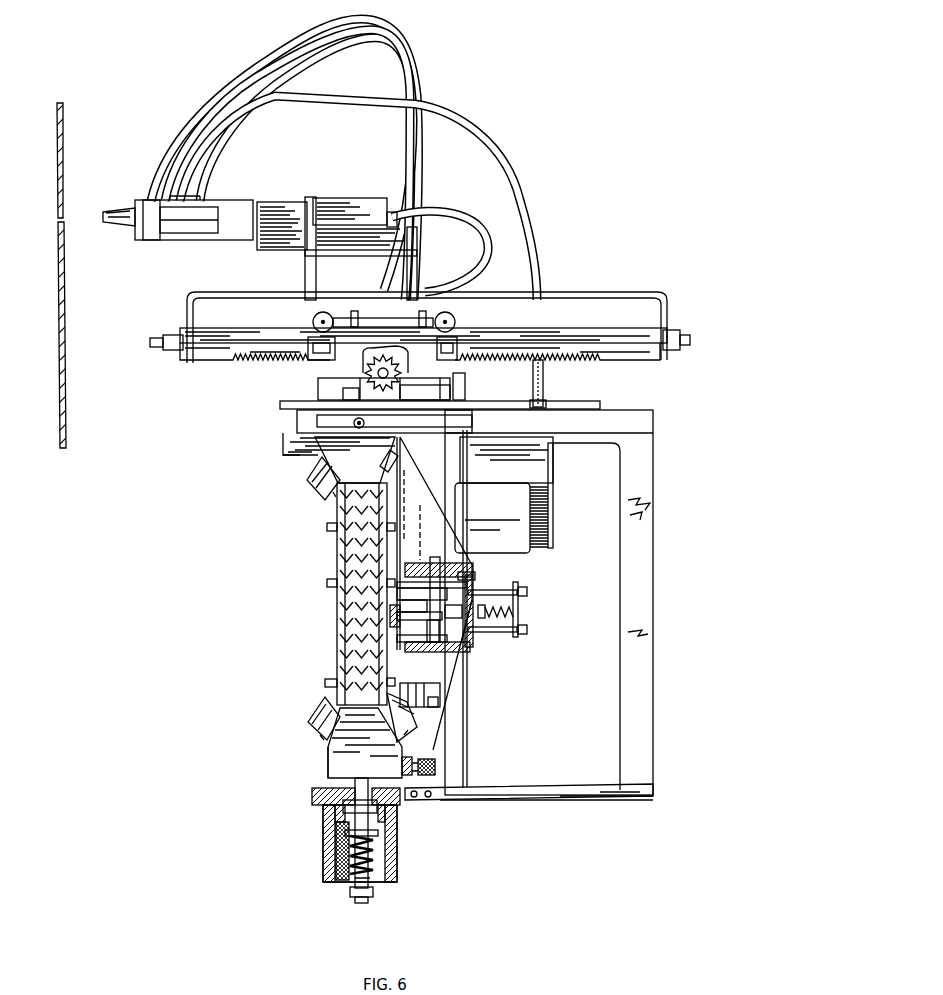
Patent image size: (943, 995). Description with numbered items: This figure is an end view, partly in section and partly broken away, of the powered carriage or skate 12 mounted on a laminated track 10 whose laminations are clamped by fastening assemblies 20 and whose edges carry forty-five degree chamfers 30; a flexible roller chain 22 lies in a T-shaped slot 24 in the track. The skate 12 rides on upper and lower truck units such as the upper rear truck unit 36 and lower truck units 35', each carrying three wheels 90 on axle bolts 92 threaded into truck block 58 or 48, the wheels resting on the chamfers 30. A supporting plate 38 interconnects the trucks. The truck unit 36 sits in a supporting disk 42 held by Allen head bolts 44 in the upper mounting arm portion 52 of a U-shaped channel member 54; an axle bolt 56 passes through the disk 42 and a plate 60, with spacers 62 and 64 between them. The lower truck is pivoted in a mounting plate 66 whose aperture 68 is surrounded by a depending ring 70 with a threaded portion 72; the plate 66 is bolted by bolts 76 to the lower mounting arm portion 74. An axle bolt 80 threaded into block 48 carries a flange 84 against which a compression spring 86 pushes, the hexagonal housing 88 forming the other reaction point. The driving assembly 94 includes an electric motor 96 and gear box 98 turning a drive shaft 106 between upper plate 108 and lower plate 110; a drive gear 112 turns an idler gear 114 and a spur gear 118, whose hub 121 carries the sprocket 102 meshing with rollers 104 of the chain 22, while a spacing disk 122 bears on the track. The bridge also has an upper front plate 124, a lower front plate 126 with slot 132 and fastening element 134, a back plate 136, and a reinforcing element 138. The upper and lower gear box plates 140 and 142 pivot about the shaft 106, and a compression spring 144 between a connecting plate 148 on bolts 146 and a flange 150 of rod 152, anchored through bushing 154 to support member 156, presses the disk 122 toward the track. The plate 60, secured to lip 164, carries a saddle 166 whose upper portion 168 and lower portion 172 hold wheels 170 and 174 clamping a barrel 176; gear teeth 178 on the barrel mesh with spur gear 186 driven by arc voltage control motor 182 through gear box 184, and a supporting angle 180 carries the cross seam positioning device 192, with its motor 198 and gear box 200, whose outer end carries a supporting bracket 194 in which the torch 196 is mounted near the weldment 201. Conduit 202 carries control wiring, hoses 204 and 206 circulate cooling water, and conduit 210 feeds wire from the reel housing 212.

The laminated track 10 is at (337, 631).
The powered carriage 12 is at (522, 824).
The fastening assembly 20 is at (328, 527).
The flexible roller chain 22 is at (337, 612).
The T-shaped slot 24 is at (392, 615).
The chamfers 30 is at (318, 697).
The lower truck units 35' is at (307, 762).
The upper rear truck follower unit 36 is at (310, 466).
The supporting plate 38 is at (468, 735).
The supporting disk 42 is at (318, 431).
The Allen head bolts 44 is at (365, 423).
The truck block 48 is at (355, 774).
The upper mounting arm portion 52 is at (440, 440).
The U-shaped channel member 54 is at (666, 524).
The axle bolt 56 is at (343, 392).
The truck block 58 is at (348, 481).
The plate 60 is at (283, 403).
The spacer 62 is at (318, 445).
The spacer washer 64 is at (316, 419).
The mounting plate 66 is at (311, 795).
The aperture 68 is at (385, 835).
The depending ring 70 is at (335, 830).
The threaded portion 72 is at (342, 806).
The lower mounting arm portion 74 is at (450, 801).
The bolts 76 is at (416, 801).
The axle bolt 80 is at (352, 896).
The flange 84 is at (338, 845).
The compression spring 86 is at (345, 863).
The hexagonal housing 88 is at (393, 850).
The wheels 90 is at (340, 502).
The axle bolts 92 is at (325, 498).
The driving assembly 94 is at (512, 563).
The electric motor 96 is at (480, 511).
The gear box 98 is at (470, 480).
The sprocket 102 is at (411, 652).
The rollers 104 is at (337, 648).
The drive shaft 106 is at (462, 700).
The upper plate 108 is at (411, 572).
The lower plate 110 is at (460, 700).
The drive gear 112 is at (468, 578).
The idler gear 114 is at (388, 600).
The spur gear 118 is at (395, 590).
The hub 121 is at (390, 607).
The spacing disk 122 is at (405, 690).
The upper front plate 124 is at (397, 570).
The lower front plate 126 is at (434, 700).
The slot 132 is at (415, 770).
The fastening element 134 is at (437, 765).
The back plate 136 is at (497, 562).
The reinforcing element 138 is at (408, 497).
The upper gear box plate 140 is at (450, 563).
The lower gear box plate 142 is at (443, 647).
The compression spring 144 is at (530, 630).
The countersunk headed bolts 146 is at (478, 607).
The connecting plate 148 is at (522, 585).
The flange 150 is at (483, 603).
The rod 152 is at (520, 607).
The bushing 154 is at (483, 620).
The gear box plate spacing and support member 156 is at (473, 638).
The lip 164 is at (312, 456).
The saddle 166 is at (415, 295).
The upper saddle portion 168 is at (345, 317).
The wheels 170 is at (313, 318).
The lower saddle portion 172 is at (458, 380).
The wheels 174 is at (304, 360).
The barrel 176 is at (577, 334).
The gear teeth 178 is at (248, 366).
The supporting angle 180 is at (604, 292).
The arc voltage control motor 182 is at (500, 361).
The gear box 184 is at (413, 388).
The spur gear 186 is at (365, 372).
The cross seam positioning device 192 is at (334, 187).
The cylinder housing 194 is at (232, 208).
The torch 196 is at (115, 209).
The electric motor 198 is at (347, 203).
The gear box 200 is at (285, 205).
The weldment 201 is at (51, 164).
The conduit 202 is at (466, 226).
The hose 204 is at (222, 100).
The second hose 206 is at (332, 16).
The conduit 210 is at (486, 90).
The housing 212 is at (554, 476).